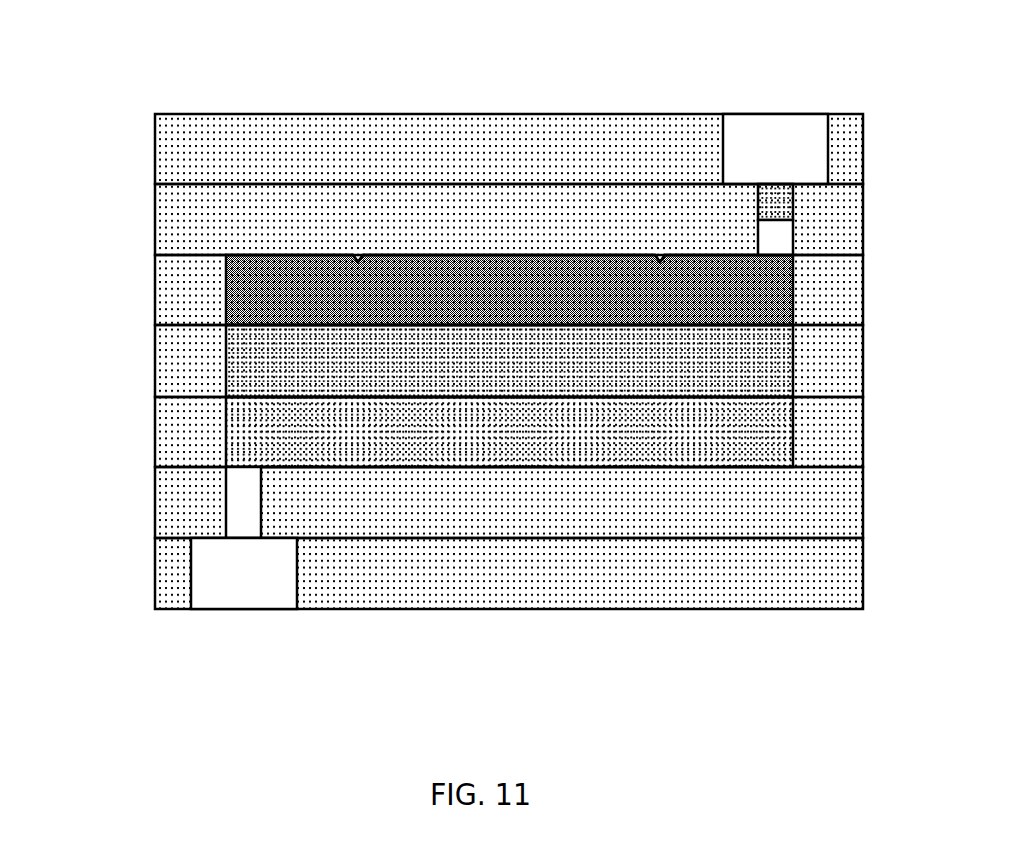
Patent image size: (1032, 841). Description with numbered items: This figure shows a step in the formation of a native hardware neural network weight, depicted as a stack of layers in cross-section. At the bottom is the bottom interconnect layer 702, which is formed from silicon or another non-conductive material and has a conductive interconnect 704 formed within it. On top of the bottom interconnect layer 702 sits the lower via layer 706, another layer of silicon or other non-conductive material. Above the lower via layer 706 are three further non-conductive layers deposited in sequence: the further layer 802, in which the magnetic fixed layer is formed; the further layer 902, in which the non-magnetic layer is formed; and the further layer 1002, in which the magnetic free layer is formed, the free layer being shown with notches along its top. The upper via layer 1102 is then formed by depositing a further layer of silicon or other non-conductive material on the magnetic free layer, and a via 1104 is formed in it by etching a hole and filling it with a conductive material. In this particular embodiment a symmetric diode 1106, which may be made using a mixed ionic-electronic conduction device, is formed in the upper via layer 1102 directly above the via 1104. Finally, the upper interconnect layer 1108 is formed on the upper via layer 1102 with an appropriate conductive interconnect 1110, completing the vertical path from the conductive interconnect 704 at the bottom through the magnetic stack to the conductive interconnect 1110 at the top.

The bottom interconnect layer 702 is at (147, 565).
The conductive interconnect 704 is at (237, 601).
The lower via layer 706 is at (147, 494).
The further layer 802 is at (147, 423).
The further layer 902 is at (147, 353).
The further layer 1002 is at (147, 284).
The upper via layer 1102 is at (147, 212).
The via 1104 is at (785, 225).
The symmetric diode 1106 is at (785, 190).
The upper interconnect layer 1108 is at (147, 143).
The conductive interconnect 1110 is at (763, 107).